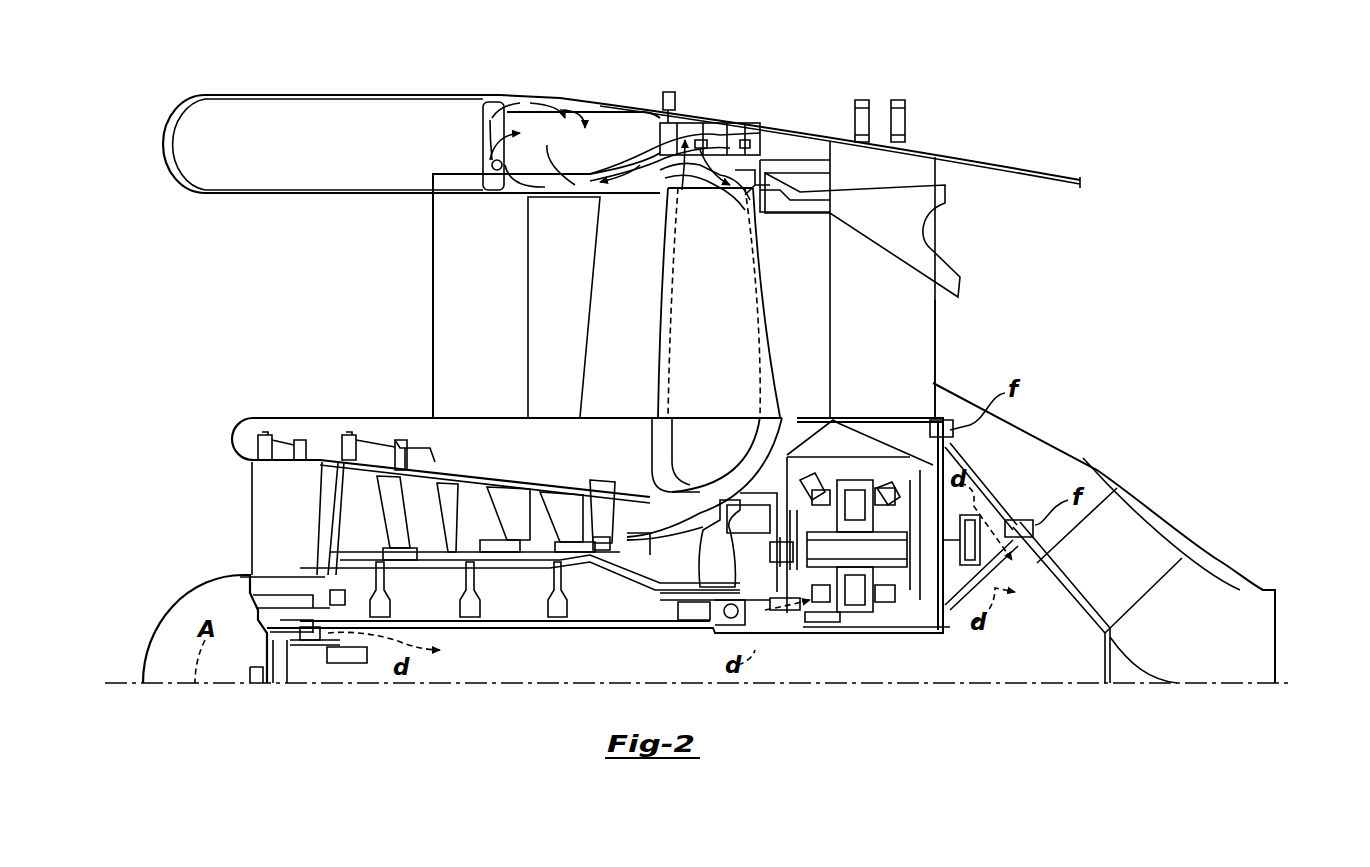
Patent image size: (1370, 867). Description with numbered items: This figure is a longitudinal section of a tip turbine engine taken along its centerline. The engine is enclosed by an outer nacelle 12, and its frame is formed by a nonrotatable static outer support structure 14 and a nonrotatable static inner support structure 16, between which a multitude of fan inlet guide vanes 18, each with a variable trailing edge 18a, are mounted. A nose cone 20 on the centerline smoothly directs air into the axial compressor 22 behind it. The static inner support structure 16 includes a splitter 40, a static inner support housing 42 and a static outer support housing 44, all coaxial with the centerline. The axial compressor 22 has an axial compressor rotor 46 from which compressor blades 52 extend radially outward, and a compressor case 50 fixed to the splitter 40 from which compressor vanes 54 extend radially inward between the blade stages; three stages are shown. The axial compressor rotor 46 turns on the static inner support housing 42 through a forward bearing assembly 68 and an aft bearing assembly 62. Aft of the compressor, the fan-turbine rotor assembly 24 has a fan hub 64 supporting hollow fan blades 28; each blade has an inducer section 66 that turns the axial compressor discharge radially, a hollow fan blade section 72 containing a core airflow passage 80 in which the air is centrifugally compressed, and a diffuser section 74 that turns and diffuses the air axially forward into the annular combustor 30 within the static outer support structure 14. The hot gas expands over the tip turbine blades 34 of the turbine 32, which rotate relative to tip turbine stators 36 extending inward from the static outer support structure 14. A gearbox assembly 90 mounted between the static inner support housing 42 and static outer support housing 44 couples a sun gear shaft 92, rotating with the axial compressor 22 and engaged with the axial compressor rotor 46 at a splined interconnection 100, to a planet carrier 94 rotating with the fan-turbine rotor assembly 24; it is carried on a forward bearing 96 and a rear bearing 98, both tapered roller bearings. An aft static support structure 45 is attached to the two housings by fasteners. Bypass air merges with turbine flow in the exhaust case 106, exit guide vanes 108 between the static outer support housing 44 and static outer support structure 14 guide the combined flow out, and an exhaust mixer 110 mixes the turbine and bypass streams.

The outer nacelle 12 is at (502, 90).
The nonrotatable static outer support structure 14 is at (590, 127).
The nonrotatable static inner support structure 16 is at (237, 405).
The fan inlet guide vanes 18 is at (499, 315).
The variable trailing edge 18a is at (571, 315).
The nose cone 20 is at (183, 597).
The axial compressor 22 is at (228, 523).
The fan-turbine rotor assembly 24 is at (786, 370).
The hollow fan blades 28 is at (655, 387).
The annular combustor 30 is at (578, 112).
The turbine 32 is at (798, 158).
The tip turbine blades 34 is at (700, 128).
The tip turbine stators 36 is at (648, 127).
The splitter 40 is at (268, 418).
The static inner support housing 42 is at (515, 630).
The static outer support housing 44 is at (903, 410).
The aft static support structure 45 is at (988, 485).
The axial compressor rotor 46 is at (660, 585).
The compressor case 50 is at (418, 462).
The compressor blades 52 is at (395, 550).
The compressor vanes 54 is at (440, 540).
The aft bearing assembly 62 is at (730, 619).
The fan hub 64 is at (690, 552).
The inducer section 66 is at (658, 430).
The forward bearing assembly 68 is at (292, 645).
The hollow fan blade section 72 is at (772, 392).
The diffuser section 74 is at (743, 203).
The core airflow passage 80 is at (662, 260).
The gearbox assembly 90 is at (865, 642).
The sun gear shaft 92 is at (812, 612).
The planet carrier 94 is at (777, 520).
The forward bearing 96 is at (807, 482).
The rear bearing 98 is at (885, 485).
The splined interconnection 100 is at (780, 600).
The exhaust case 106 is at (913, 147).
The exit guide vanes 108 is at (925, 310).
The exhaust mixer 110 is at (897, 190).